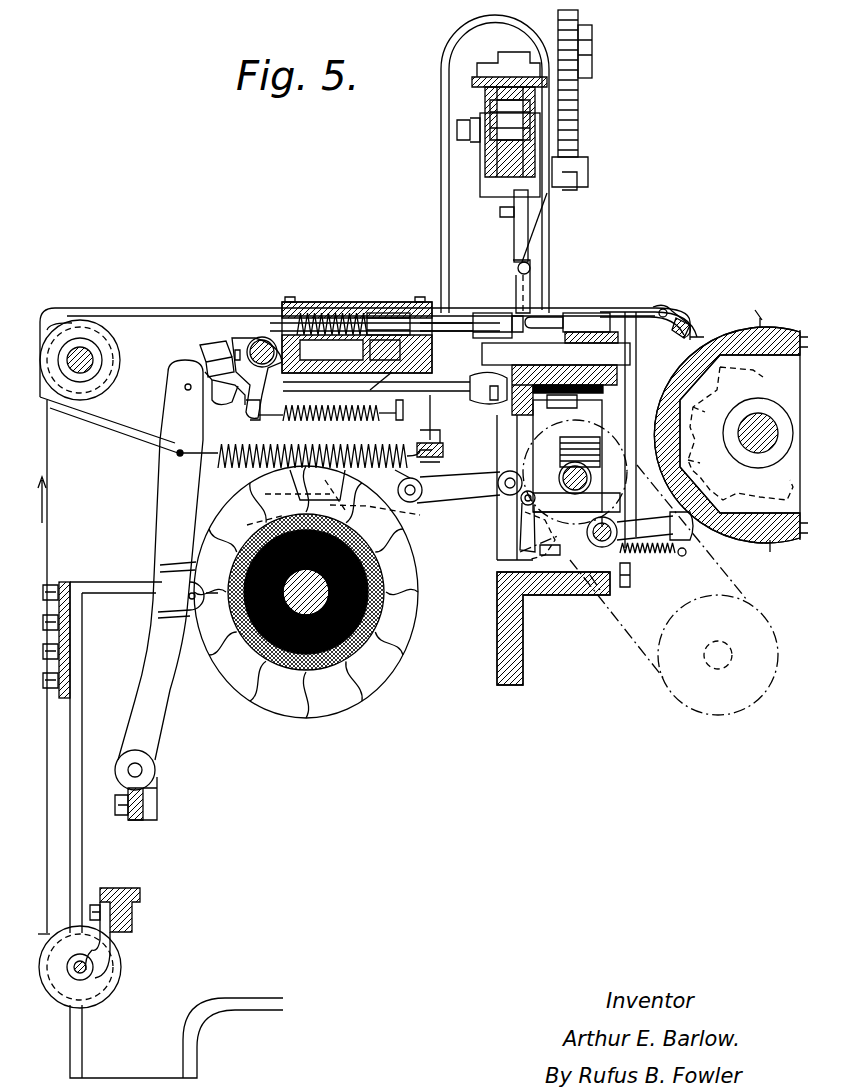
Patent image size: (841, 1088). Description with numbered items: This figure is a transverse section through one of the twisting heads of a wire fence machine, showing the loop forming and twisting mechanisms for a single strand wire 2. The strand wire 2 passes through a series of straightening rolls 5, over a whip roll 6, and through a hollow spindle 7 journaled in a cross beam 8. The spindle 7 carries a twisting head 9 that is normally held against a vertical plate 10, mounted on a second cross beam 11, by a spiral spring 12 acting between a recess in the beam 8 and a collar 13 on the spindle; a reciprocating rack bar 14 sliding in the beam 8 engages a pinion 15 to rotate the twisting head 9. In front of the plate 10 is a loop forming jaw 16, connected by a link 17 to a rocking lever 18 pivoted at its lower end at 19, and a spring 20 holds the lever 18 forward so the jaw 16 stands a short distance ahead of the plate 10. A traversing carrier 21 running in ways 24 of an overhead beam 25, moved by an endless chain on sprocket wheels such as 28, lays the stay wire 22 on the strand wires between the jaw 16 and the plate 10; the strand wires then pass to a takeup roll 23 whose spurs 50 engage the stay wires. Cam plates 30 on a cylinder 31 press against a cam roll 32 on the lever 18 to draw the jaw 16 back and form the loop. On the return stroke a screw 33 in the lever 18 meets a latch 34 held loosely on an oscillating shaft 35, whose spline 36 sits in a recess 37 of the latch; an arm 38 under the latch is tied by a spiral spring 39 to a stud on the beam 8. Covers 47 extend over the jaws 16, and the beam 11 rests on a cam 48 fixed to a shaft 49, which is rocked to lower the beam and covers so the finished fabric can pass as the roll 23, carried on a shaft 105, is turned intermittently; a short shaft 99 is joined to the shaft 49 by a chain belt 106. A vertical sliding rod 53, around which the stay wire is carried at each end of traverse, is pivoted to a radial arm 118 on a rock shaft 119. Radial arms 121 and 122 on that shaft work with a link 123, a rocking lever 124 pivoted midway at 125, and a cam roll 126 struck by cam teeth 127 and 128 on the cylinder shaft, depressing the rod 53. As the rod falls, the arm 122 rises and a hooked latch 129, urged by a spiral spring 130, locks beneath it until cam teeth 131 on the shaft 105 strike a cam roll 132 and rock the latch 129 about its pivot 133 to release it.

The strand wire 2 is at (187, 316).
The straightening rolls 5 is at (70, 622).
The whip roll 6 is at (118, 356).
The hollow spindle 7 is at (418, 302).
The cross beam 8 is at (432, 352).
The twisting head 9 is at (478, 318).
The vertical plate 10 is at (512, 320).
The cross beam 11 is at (637, 370).
The spiral spring 12 is at (322, 302).
The collar 13 is at (358, 312).
The reciprocating rack bar 14 is at (403, 396).
The pinion 15 is at (386, 313).
The loop forming jaw 16 is at (590, 322).
The link 17 is at (475, 400).
The rocking lever 18 is at (165, 488).
The pivot 19 is at (142, 770).
The spring 20 is at (415, 452).
The traversing carrier 21 is at (530, 290).
The stay wire 22 is at (551, 251).
The takeup roll 23 is at (748, 328).
The ways 24 is at (482, 152).
The overhead beam 25 is at (505, 87).
The sprocket wheel 28 is at (578, 123).
The cam plate 30 is at (222, 515).
The cylinder 31 is at (385, 640).
The cam roll 32 is at (195, 612).
The screw 33 is at (200, 390).
The latch 34 is at (220, 360).
The oscillating shaft 35 is at (262, 335).
The spline 36 is at (236, 348).
The recess 37 is at (228, 388).
The arm 38 is at (254, 412).
The spiral spring 39 is at (285, 425).
The covers 47 is at (555, 317).
The cam 48 is at (591, 478).
The shaft 49 is at (570, 462).
The spurs 50 is at (762, 322).
The vertical sliding rod 53 is at (540, 437).
The short shaft 99 is at (730, 655).
The shaft 105 is at (762, 425).
The chain belt 106 is at (640, 632).
The radial arm 118 is at (512, 536).
The rock shaft 119 is at (632, 575).
The radial arm 121 is at (550, 595).
The radial arm 122 is at (658, 516).
The link 123 is at (520, 505).
The rocking lever 124 is at (460, 487).
The pivot 125 is at (415, 475).
The cam roll 126 is at (283, 494).
The cam tooth 127 is at (412, 504).
The cam tooth 128 is at (250, 520).
The hooked latch 129 is at (692, 535).
The spiral spring 130 is at (655, 553).
The cam teeth 131 is at (732, 372).
The cam roll 132 is at (715, 414).
The pivot 133 is at (712, 455).